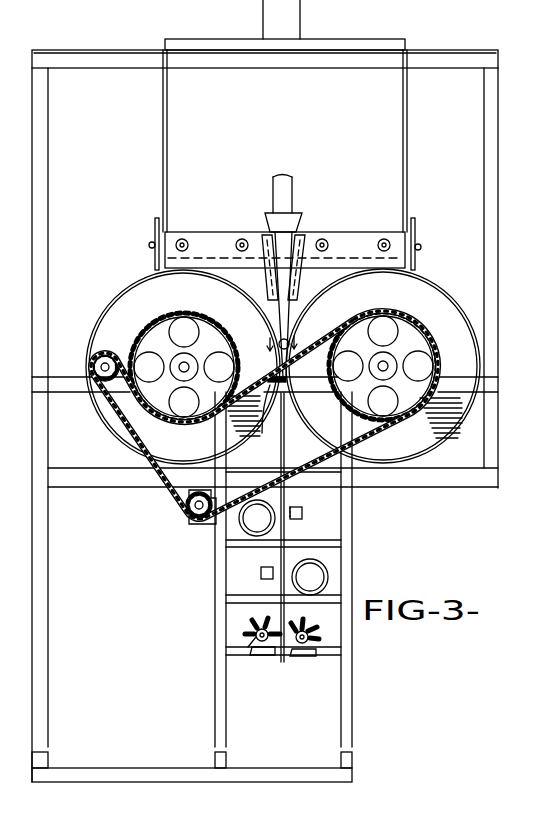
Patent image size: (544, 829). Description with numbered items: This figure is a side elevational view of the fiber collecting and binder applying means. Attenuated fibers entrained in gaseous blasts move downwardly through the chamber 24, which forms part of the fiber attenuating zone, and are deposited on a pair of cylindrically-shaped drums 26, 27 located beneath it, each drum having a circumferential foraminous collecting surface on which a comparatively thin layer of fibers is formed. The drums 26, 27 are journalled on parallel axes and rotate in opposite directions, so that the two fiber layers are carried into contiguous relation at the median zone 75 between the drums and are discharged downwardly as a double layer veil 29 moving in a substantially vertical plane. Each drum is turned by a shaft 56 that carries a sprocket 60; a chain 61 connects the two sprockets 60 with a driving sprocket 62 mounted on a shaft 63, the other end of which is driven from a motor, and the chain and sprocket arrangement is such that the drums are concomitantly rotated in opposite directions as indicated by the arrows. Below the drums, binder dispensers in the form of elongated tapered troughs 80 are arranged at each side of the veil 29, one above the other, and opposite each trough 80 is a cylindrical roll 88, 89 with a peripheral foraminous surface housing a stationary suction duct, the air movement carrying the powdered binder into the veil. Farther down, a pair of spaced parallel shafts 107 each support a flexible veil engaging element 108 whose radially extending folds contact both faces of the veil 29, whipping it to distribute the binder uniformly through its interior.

The chamber 24 is at (407, 147).
The drum 26 is at (440, 292).
The drum 27 is at (116, 298).
The veil 29 is at (284, 438).
The shaft 56 is at (178, 365).
The sprocket 60 is at (224, 312).
The chain 61 is at (125, 427).
The driving sprocket 62 is at (187, 500).
The shaft 63 is at (190, 518).
The median zone 75 is at (190, 462).
The trough 80 is at (303, 513).
The roll 88 is at (328, 573).
The roll 89 is at (243, 528).
The shaft 107 is at (300, 644).
The veil engaging element 108 is at (287, 630).